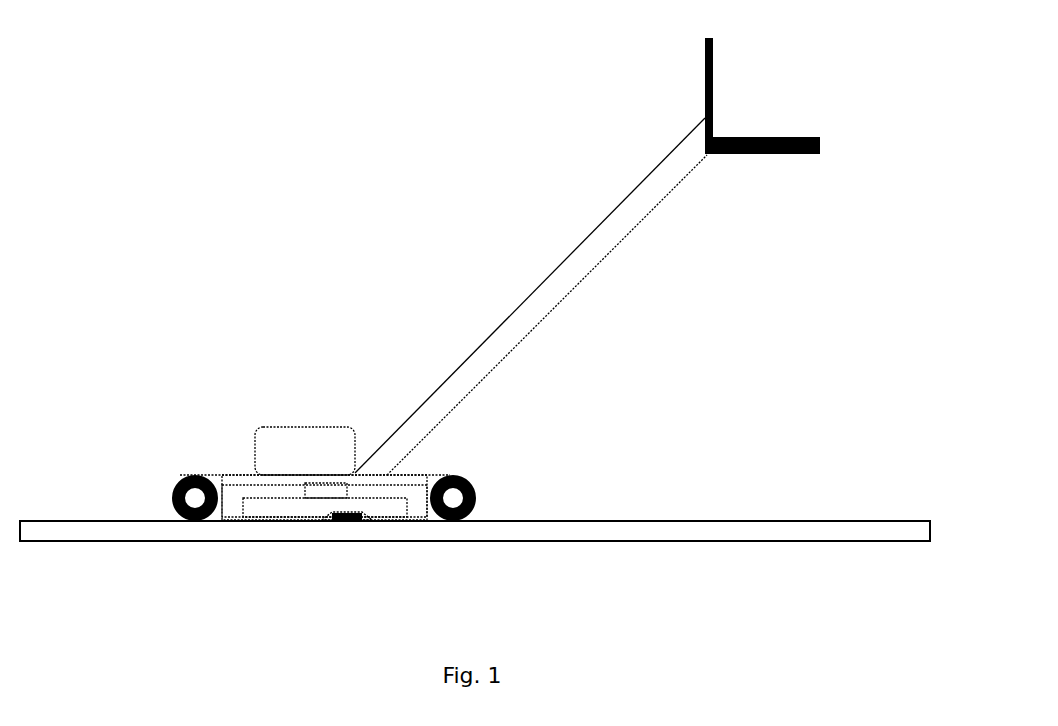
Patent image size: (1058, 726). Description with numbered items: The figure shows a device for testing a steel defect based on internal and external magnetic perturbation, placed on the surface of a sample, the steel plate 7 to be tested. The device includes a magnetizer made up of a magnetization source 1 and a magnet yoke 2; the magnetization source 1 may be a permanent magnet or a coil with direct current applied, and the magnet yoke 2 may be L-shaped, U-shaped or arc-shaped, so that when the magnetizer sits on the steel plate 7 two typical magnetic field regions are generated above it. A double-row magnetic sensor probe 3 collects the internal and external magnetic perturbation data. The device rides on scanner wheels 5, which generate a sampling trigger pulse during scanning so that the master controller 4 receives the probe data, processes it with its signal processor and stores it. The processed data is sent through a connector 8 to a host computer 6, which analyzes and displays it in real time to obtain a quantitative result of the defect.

The magnetization source 1 is at (315, 490).
The magnet yoke 2 is at (265, 490).
The double-row magnetic sensor probe 3 is at (357, 523).
The master controller 4 is at (290, 442).
The scanner wheels 5 is at (192, 475).
The host computer 6 is at (738, 153).
The steel plate 7 is at (492, 532).
The connector 8 is at (585, 265).